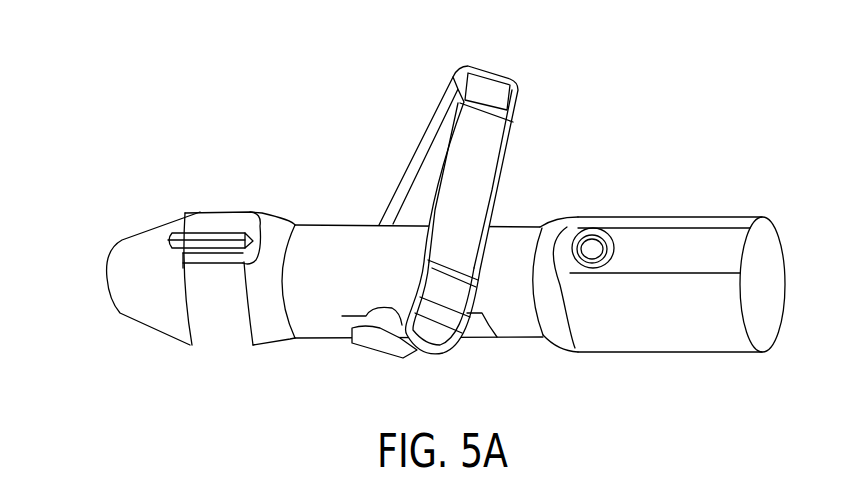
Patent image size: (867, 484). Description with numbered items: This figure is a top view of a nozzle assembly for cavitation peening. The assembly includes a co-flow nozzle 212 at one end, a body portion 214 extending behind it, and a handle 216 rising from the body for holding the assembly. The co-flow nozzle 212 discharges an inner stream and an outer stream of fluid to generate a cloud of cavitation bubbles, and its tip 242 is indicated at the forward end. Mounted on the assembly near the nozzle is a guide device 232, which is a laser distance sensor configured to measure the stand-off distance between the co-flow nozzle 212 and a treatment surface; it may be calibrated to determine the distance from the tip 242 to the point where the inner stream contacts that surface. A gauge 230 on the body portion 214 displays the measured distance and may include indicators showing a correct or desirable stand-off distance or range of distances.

The co-flow nozzle 212 is at (143, 320).
The body portion 214 is at (580, 353).
The handle 216 is at (485, 68).
The gauge 230 is at (594, 245).
The guide device 232 is at (217, 227).
The tip 242 is at (102, 292).